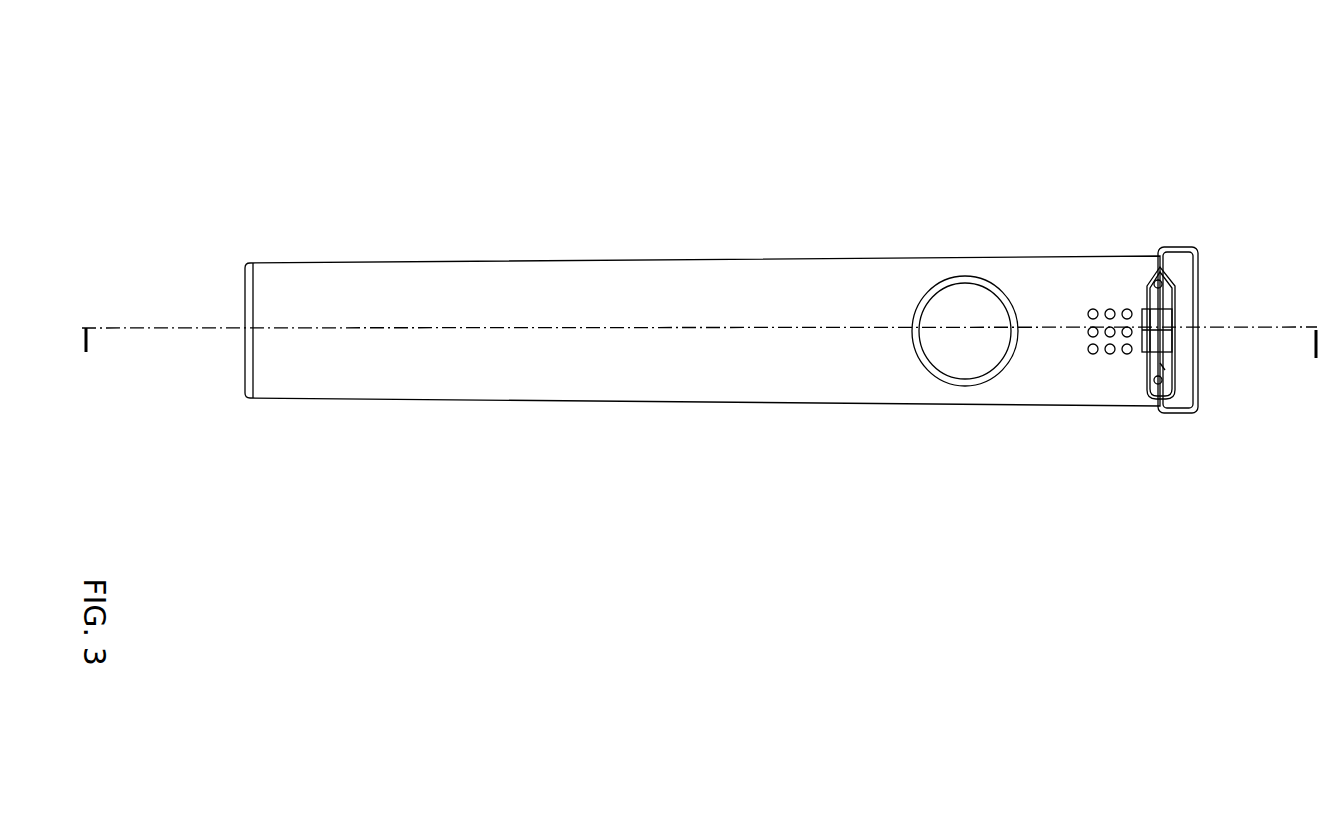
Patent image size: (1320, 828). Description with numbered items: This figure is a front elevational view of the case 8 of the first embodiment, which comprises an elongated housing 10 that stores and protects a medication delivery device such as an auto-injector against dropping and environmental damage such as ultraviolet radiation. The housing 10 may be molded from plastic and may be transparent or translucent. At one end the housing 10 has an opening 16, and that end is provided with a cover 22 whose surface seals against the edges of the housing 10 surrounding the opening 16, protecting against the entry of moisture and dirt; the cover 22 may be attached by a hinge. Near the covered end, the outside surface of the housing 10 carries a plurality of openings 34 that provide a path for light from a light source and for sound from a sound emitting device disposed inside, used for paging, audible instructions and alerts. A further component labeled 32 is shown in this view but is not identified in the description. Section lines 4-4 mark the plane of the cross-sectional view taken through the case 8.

The section lines 4- 4 is at (700, 354).
The case 8 is at (757, 321).
The housing 10 is at (548, 300).
The opening 16 is at (962, 347).
The cover 22 is at (1177, 263).
The mounting plate 32 is at (1168, 363).
The openings 34 is at (1100, 306).